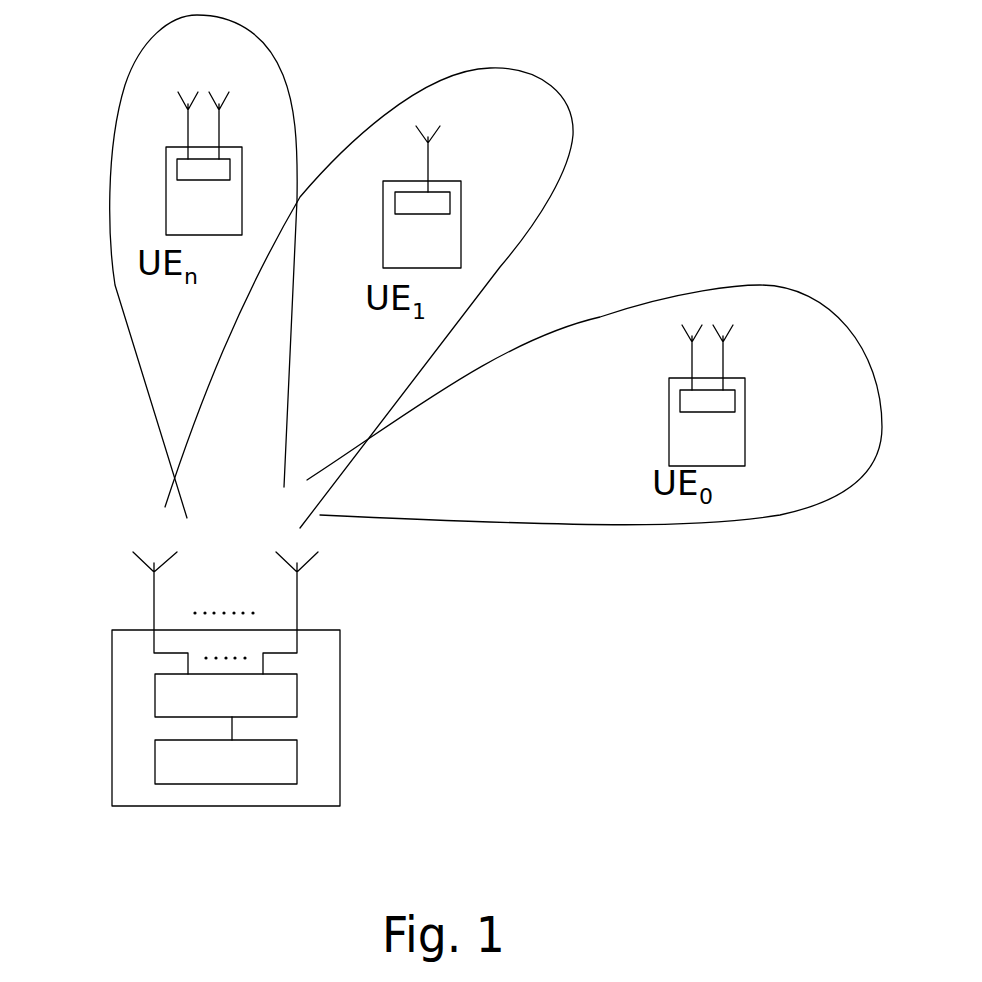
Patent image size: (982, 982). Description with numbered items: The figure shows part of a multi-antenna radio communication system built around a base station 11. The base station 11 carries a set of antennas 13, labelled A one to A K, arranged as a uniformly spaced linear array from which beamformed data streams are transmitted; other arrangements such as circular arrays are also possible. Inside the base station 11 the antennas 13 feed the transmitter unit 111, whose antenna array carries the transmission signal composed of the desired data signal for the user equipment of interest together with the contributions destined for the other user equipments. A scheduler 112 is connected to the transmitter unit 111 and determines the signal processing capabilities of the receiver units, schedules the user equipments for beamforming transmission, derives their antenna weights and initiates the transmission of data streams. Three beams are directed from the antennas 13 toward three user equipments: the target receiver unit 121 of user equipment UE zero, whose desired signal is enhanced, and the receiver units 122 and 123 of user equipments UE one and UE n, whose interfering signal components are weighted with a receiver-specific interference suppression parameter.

The base station 11 is at (294, 664).
The antennas 13 is at (133, 543).
The transmitter unit 111 is at (307, 683).
The scheduler 112 is at (308, 751).
The target receiver unit 121 is at (735, 397).
The receiver unit 122 is at (450, 203).
The receiver unit 123 is at (177, 163).